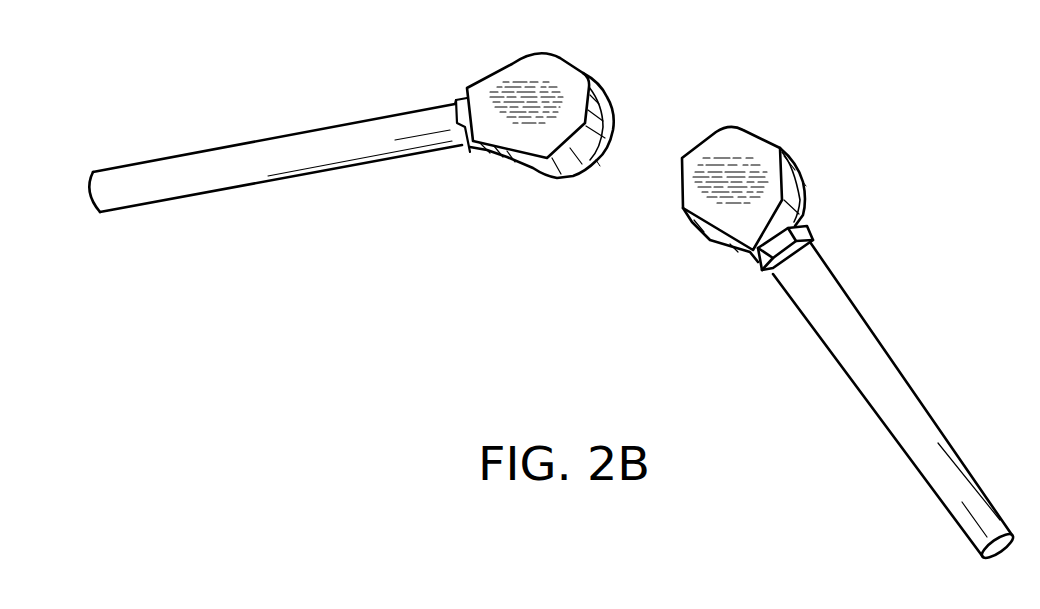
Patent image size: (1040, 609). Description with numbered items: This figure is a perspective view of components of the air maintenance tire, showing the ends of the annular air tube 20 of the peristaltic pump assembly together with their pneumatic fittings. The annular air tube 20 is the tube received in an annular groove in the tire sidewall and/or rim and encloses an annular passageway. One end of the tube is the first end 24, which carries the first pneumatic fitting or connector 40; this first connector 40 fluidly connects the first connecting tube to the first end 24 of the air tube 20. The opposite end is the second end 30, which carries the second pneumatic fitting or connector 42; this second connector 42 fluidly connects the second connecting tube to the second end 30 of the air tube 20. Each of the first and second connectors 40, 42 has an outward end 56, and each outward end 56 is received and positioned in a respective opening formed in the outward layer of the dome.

The annular air tube 20 is at (947, 513).
The first end 24 is at (800, 283).
The second end 30 is at (432, 143).
The first pneumatic fitting or connector 40 is at (682, 205).
The second pneumatic fitting or connector 42 is at (515, 60).
The outward end 56 is at (600, 168).